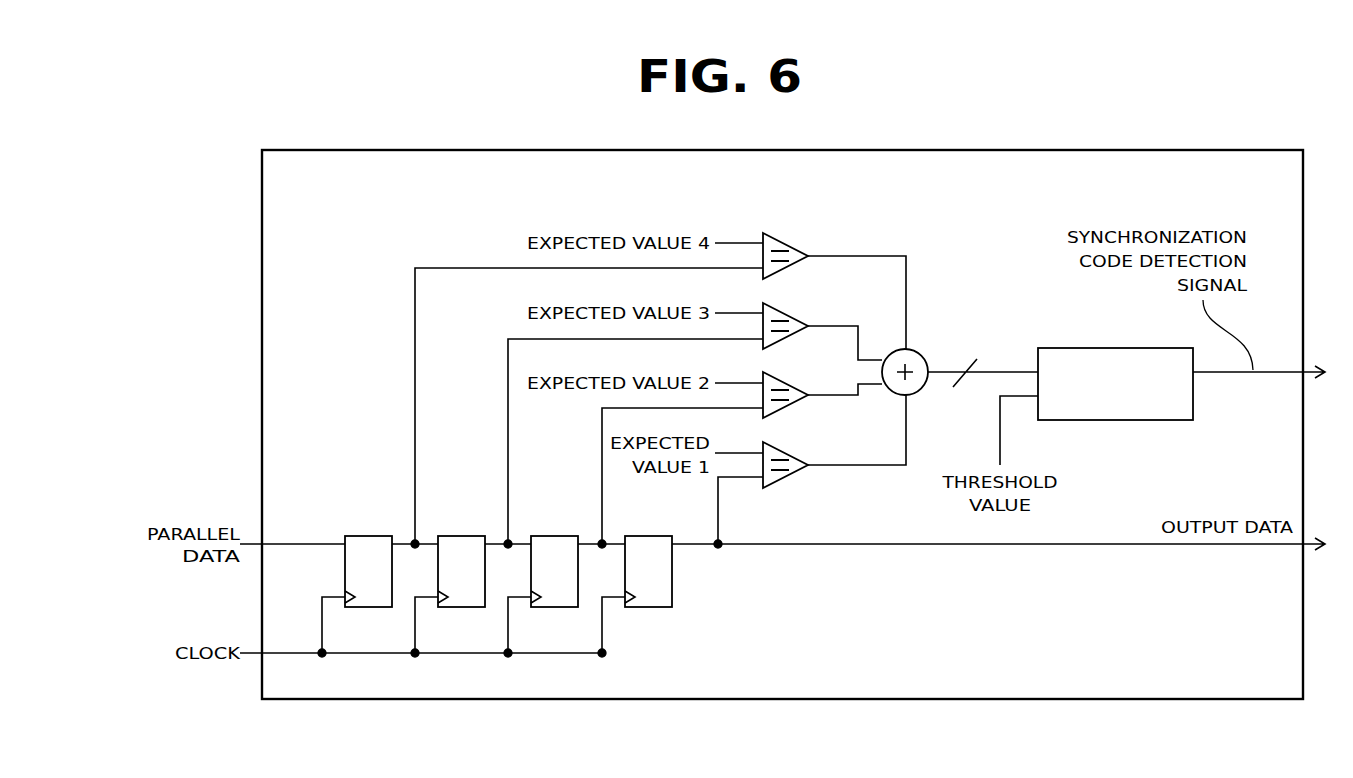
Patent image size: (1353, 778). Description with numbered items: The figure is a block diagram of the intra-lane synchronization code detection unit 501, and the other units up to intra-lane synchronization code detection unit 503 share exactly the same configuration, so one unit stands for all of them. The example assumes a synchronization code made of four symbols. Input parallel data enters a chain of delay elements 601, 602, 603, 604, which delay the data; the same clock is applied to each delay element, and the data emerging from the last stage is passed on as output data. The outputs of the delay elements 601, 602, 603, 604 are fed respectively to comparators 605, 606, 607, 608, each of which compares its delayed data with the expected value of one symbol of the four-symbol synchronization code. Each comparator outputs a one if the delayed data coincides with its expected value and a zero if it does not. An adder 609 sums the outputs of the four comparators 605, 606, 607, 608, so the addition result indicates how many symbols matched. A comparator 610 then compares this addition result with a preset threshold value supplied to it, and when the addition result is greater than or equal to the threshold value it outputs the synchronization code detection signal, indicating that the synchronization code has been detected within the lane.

The intra-lane synchronization code detection unit 501 is at (782, 424).
The intra-lane synchronization code detection unit 503 is at (1237, 133).
The delay element 601 is at (368, 536).
The delay element 602 is at (461, 536).
The delay element 603 is at (558, 536).
The delay element 604 is at (651, 536).
The comparator 605 is at (789, 242).
The comparator 606 is at (789, 312).
The comparator 607 is at (789, 381).
The comparator 608 is at (789, 451).
The adder 609 is at (921, 356).
The comparator 610 is at (1108, 348).